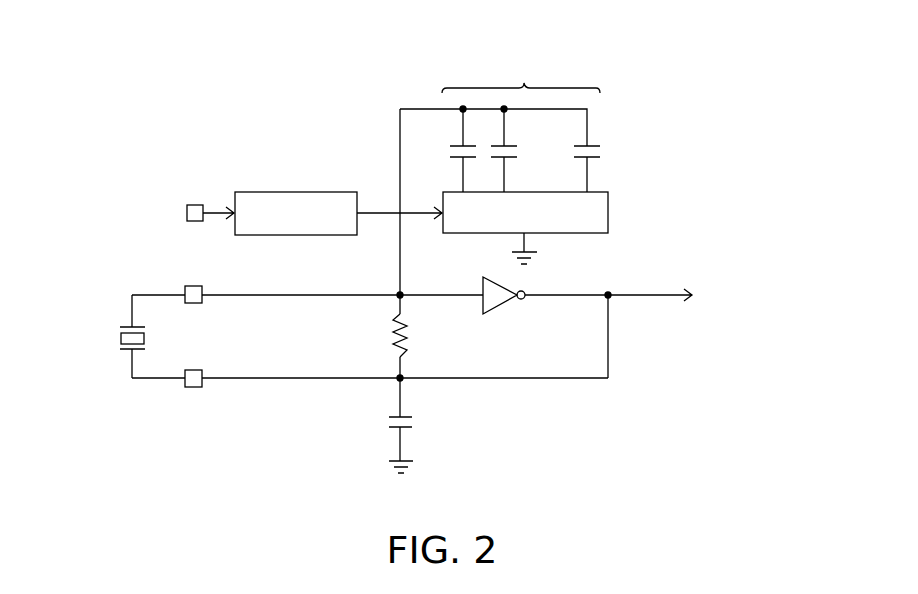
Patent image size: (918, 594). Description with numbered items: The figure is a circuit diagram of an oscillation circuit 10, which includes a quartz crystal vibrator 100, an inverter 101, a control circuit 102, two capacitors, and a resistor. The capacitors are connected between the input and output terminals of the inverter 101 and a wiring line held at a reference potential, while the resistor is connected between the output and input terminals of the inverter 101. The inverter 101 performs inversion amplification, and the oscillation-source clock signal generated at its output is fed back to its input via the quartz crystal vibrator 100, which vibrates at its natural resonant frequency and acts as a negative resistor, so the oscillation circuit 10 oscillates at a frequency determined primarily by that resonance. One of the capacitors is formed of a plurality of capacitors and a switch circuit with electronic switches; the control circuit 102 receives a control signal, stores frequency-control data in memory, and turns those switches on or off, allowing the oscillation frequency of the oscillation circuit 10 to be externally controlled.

The oscillation circuit 10 is at (456, 27).
The quartz crystal vibrator 100 is at (114, 338).
The inverter 101 is at (497, 306).
The control circuit 102 is at (297, 192).